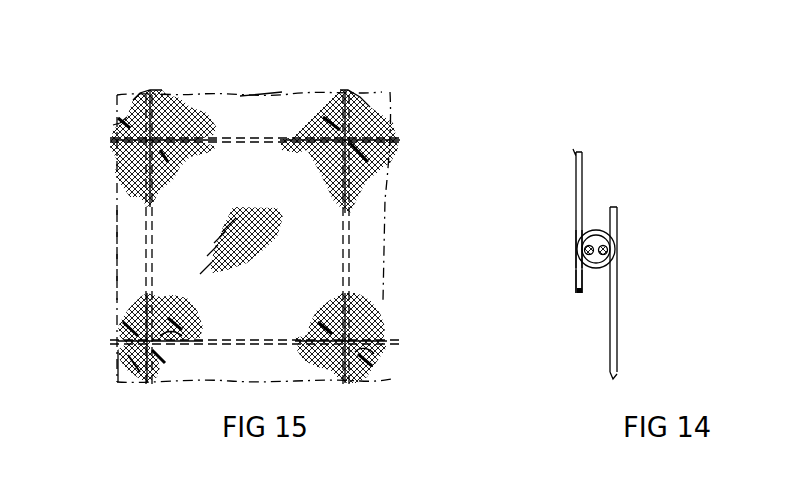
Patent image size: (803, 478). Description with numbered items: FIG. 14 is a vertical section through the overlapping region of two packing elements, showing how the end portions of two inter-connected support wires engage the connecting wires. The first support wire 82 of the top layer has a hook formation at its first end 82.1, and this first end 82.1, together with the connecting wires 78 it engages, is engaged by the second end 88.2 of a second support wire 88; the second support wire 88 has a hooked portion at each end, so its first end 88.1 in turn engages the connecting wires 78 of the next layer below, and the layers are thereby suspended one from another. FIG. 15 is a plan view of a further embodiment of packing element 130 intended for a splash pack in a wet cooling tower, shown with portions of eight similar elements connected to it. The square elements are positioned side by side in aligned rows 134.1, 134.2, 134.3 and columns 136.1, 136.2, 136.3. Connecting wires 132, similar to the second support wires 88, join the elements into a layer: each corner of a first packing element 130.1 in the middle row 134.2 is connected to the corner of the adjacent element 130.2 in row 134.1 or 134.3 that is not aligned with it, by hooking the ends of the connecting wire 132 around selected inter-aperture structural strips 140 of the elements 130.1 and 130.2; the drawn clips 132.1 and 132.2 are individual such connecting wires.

In FIG. 15, the packing element 130 is at (191, 200).
In FIG. 15, the first packing element 130.1 is at (282, 194).
In FIG. 15, the adjacent packing element 130.2 is at (292, 131).
In FIG. 15, the connecting wire 132 is at (362, 124).
In FIG. 15, the clip 132.1 is at (186, 308).
In FIG. 15, the clip 132.2 is at (132, 380).
In FIG. 15, the first row 134.1 is at (116, 376).
In FIG. 15, the second row 134.2 is at (115, 233).
In FIG. 15, the third row 134.3 is at (110, 122).
In FIG. 15, the first column 136.1 is at (133, 90).
In FIG. 15, the second column 136.2 is at (266, 92).
In FIG. 15, the third column 136.3 is at (373, 96).
In FIG. 15, the inter-aperture structural strip 140 is at (172, 337).
In FIG. 14, the connecting wire 78 is at (550, 267).
In FIG. 14, the first support wire 82 is at (591, 180).
In FIG. 14, the first end of first support wire 82.1 is at (531, 238).
In FIG. 14, the second support wire 88 is at (625, 323).
In FIG. 14, the first end of second support wire 88.1 is at (567, 226).
In FIG. 14, the second end of second support wire 88.2 is at (569, 290).